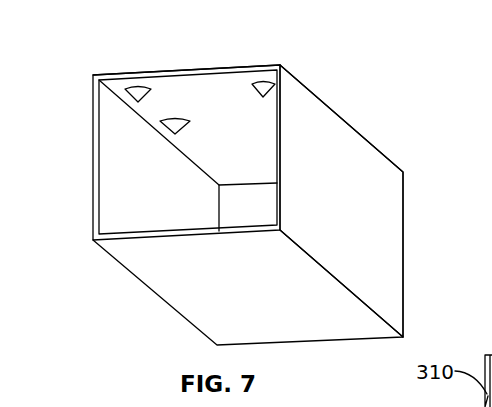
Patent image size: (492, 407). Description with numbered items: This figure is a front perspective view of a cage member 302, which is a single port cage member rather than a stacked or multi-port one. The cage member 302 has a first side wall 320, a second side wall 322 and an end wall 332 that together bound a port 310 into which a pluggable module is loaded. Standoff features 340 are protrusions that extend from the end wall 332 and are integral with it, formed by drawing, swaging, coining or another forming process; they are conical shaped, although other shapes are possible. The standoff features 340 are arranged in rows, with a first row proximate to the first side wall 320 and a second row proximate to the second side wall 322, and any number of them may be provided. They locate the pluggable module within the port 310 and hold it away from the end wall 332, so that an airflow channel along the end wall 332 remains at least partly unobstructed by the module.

The cage member 302 is at (341, 79).
The port 310 is at (117, 177).
The first side wall 320 is at (95, 133).
The second side wall 322 is at (380, 215).
The end wall 332 is at (200, 69).
The standoff features 340 is at (138, 84).